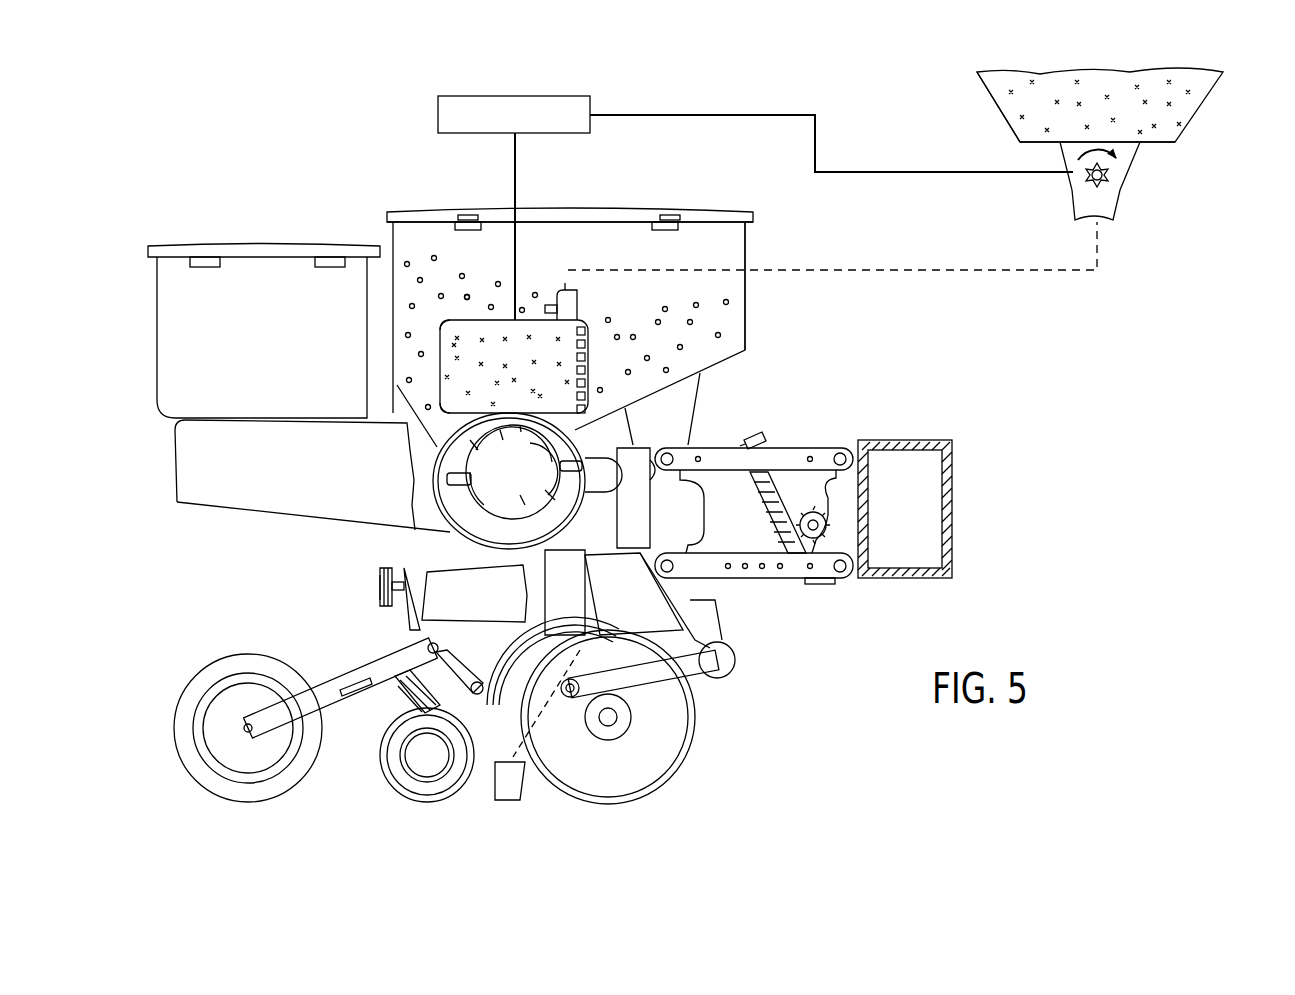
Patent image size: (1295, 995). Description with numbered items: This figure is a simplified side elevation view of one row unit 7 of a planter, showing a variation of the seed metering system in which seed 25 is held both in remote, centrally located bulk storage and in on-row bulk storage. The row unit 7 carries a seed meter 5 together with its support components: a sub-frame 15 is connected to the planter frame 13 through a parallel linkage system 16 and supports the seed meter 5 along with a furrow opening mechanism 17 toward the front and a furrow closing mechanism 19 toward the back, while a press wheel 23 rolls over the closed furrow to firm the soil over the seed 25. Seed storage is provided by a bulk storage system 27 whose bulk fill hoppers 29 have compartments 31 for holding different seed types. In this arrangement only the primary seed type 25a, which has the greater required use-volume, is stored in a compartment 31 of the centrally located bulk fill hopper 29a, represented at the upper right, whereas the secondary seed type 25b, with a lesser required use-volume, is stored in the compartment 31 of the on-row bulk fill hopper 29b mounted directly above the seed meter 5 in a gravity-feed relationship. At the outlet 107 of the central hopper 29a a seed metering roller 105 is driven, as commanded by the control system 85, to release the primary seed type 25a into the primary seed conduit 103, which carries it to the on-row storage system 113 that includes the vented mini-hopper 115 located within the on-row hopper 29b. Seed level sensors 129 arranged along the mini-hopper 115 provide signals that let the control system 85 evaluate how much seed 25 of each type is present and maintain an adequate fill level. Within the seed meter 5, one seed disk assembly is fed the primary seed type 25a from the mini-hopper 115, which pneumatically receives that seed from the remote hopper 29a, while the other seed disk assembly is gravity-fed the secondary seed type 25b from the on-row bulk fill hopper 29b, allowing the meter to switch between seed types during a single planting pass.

The seed meter 5 is at (450, 533).
The row unit 7 is at (142, 523).
The frame 13 is at (893, 436).
The sub-frame 15 is at (706, 432).
The parallel linkage system 16 is at (790, 445).
The furrow opening mechanism 17 is at (680, 779).
The furrow closing mechanism 19 is at (380, 788).
The press wheel 23 is at (176, 751).
The seeds 25 is at (526, 242).
The primary seed type 25a is at (457, 343).
The secondary seed type 25b is at (470, 296).
The bulk storage system 27 is at (890, 92).
The bulk fill hopper 29 is at (400, 200).
The centrally located bulk fill hopper 29a is at (995, 110).
The on-row bulk fill hopper 29b is at (748, 246).
The compartment 31 is at (425, 223).
The control system 85 is at (438, 114).
The primary seed conduit 103 is at (564, 297).
The seed metering roller 105 is at (1095, 187).
The outlet 107 is at (1130, 165).
The on-row storage system 113 is at (432, 397).
The mini-hopper 115 is at (438, 334).
The seed level sensors 129 is at (588, 384).